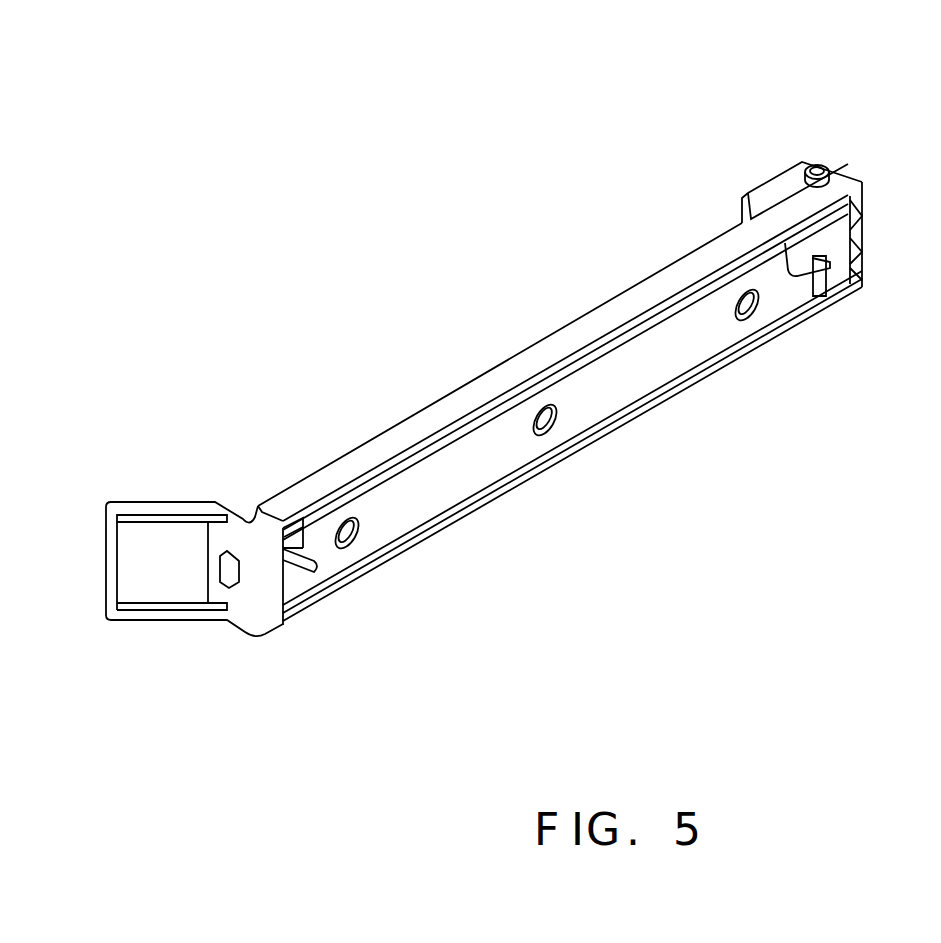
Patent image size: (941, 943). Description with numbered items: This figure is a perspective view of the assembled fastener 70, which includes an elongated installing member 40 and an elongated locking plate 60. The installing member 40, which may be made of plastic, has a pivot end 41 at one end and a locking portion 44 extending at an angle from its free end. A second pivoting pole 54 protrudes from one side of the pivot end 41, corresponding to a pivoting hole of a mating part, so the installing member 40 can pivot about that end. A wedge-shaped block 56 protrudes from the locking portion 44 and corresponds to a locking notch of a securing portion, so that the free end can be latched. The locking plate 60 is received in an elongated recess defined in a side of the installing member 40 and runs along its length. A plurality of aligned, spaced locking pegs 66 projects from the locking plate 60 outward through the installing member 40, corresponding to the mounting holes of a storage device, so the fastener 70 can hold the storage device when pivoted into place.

The fastener 70 is at (481, 357).
The installing member 40 is at (587, 327).
The pivot end 41 is at (765, 212).
The second pivoting pole 54 is at (818, 166).
The locking portion 44 is at (138, 510).
The wedge-shaped block 56 is at (232, 575).
The locking pegs 66 is at (303, 558).
The locking plate 60 is at (660, 362).